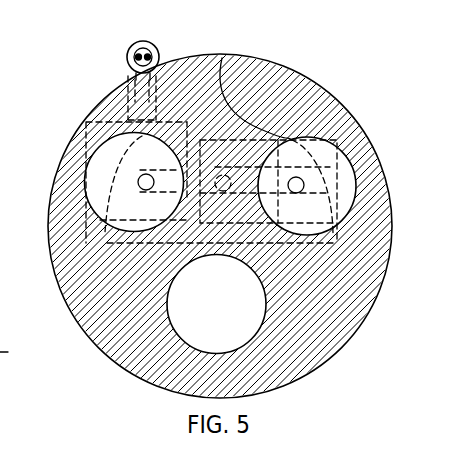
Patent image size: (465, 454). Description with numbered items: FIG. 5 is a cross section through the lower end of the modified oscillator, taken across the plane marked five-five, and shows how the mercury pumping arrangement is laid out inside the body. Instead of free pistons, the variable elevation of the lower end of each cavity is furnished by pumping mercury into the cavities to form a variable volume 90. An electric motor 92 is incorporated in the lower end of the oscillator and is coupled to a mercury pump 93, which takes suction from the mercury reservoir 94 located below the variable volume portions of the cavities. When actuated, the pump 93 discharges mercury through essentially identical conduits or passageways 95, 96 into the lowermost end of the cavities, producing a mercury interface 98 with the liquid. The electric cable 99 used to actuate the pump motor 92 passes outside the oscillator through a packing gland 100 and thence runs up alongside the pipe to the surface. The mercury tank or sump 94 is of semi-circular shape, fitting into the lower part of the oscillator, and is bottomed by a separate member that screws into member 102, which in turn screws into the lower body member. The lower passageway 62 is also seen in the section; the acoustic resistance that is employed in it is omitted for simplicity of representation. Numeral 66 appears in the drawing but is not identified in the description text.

The lower passageway 62 is at (253, 293).
The valve body 66 is at (0, 27).
The variable volume 90 is at (100, 188).
The electric motor 92 is at (98, 126).
The mercury pump 93 is at (300, 153).
The mercury reservoir 94 is at (222, 58).
The conduit 95 is at (137, 173).
The conduit 96 is at (300, 187).
The mercury interface 98 is at (0, 406).
The electric cable 99 is at (131, 46).
The packing gland 100 is at (133, 88).
The member 102 is at (320, 350).